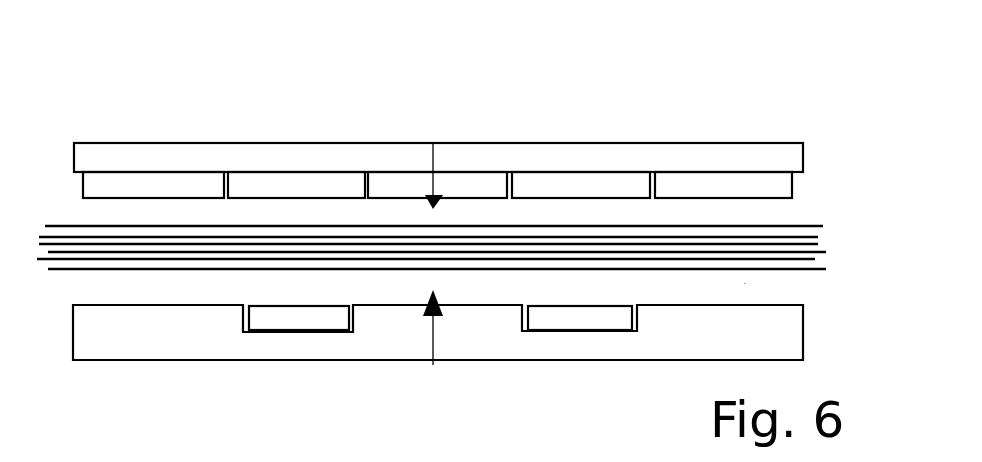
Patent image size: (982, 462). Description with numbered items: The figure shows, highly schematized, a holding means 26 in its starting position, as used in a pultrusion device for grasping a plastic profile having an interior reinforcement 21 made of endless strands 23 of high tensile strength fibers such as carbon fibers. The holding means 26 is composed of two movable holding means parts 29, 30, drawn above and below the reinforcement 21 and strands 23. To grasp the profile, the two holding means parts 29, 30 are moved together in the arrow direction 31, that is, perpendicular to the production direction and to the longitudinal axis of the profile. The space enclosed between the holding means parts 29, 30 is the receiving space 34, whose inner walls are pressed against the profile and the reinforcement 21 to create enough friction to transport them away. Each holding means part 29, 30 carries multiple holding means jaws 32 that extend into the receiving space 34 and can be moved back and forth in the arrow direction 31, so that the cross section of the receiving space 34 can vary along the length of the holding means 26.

The reinforcement 21 is at (446, 255).
The strands 23 is at (65, 270).
The holding means 26 is at (438, 222).
The holding means part 29 is at (162, 152).
The holding means part 30 is at (186, 342).
The arrow direction 31 is at (437, 160).
The holding means jaws 32 is at (107, 180).
The receiving space 34 is at (745, 283).